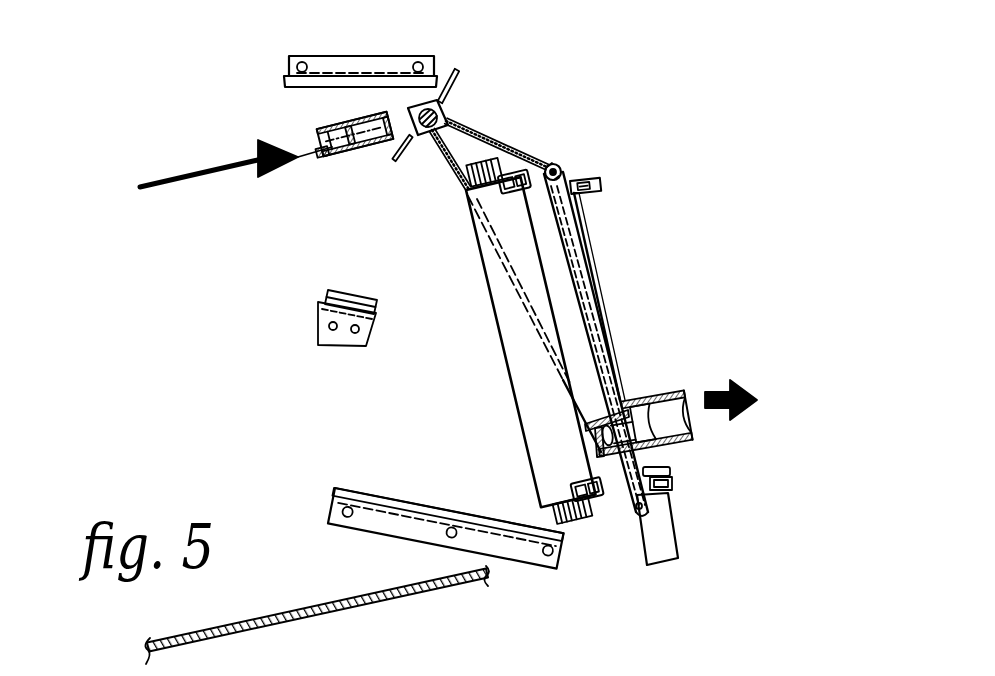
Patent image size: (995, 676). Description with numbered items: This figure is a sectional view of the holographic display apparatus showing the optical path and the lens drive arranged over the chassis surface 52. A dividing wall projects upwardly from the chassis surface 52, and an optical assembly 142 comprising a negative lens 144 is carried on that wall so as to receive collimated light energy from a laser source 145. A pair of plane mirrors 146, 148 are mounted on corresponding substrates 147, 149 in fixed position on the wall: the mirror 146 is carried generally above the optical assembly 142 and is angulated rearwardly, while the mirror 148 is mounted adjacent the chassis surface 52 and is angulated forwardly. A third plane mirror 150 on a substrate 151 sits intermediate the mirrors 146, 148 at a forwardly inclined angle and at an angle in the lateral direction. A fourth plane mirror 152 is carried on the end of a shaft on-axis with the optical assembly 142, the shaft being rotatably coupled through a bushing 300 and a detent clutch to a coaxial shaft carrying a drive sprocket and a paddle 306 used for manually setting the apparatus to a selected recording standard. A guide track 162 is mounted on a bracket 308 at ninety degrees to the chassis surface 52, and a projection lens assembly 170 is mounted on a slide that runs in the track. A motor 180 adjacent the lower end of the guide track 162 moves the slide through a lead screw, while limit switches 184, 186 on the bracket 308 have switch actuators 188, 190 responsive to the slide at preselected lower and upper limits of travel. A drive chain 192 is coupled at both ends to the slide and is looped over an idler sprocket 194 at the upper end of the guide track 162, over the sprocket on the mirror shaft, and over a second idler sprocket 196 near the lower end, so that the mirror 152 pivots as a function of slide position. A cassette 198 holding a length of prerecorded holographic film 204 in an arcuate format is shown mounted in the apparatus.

The chassis surface 52 is at (380, 606).
The optical assembly 142 is at (322, 150).
The negative lens 144 is at (348, 141).
The laser source 145 is at (172, 182).
The plane mirror 146 is at (318, 80).
The substrate 147 is at (400, 65).
The plane mirror 148 is at (406, 502).
The substrate 149 is at (400, 527).
The third plane mirror 150 is at (370, 292).
The substrate 151 is at (312, 320).
The fourth plane mirror 152 is at (428, 138).
The guide track 162 is at (605, 355).
The projection lens assembly 170 is at (684, 385).
The motor 180 is at (672, 548).
The limit switch 184 is at (670, 472).
The limit switch 186 is at (578, 185).
The switch actuator 188 is at (672, 488).
The switch actuator 190 is at (600, 187).
The drive chain 192 is at (512, 150).
The idler sprocket 194 is at (560, 168).
The second idler sprocket 196 is at (640, 530).
The cassette 198 is at (498, 373).
The holographic film 204 is at (550, 312).
The bushing 300 is at (442, 118).
The paddle 306 is at (456, 72).
The bracket 308 is at (598, 256).